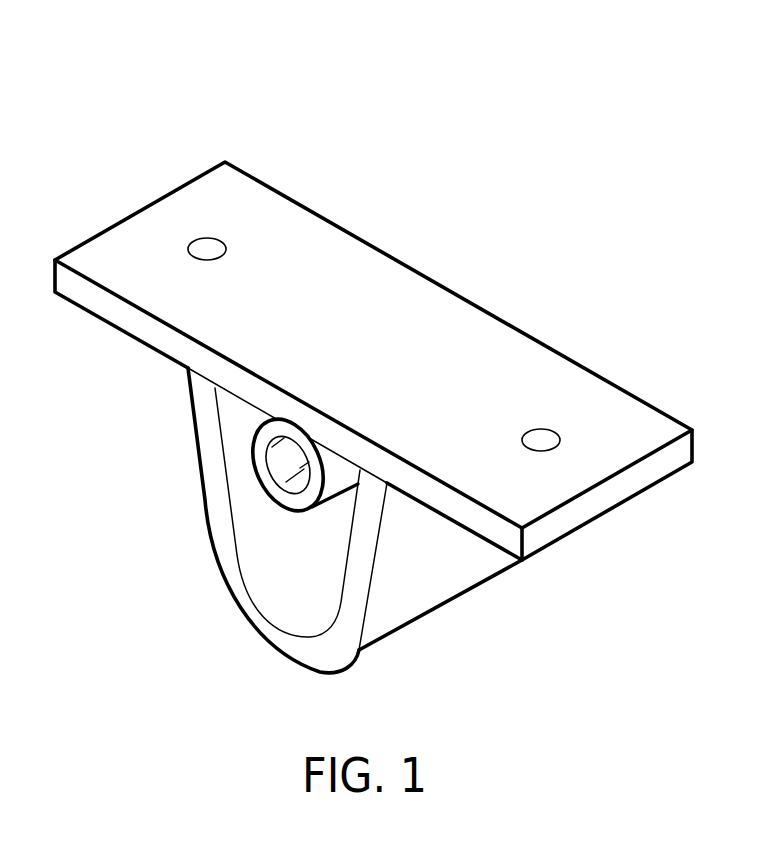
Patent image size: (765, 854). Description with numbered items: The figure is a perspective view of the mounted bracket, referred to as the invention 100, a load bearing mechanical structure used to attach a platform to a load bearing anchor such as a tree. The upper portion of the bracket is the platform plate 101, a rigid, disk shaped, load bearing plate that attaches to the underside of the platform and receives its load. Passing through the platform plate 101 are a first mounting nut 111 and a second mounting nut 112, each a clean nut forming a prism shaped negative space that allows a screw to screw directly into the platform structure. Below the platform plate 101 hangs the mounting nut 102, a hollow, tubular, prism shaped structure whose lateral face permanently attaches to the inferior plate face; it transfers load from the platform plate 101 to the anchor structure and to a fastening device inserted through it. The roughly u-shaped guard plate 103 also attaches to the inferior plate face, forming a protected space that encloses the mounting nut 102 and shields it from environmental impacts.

The invention 100 is at (592, 120).
The platform plate 101 is at (458, 293).
The mounting nut 102 is at (280, 468).
The guard plate 103 is at (402, 585).
The first mounting nut 111 is at (207, 248).
The second mounting nut 112 is at (542, 438).